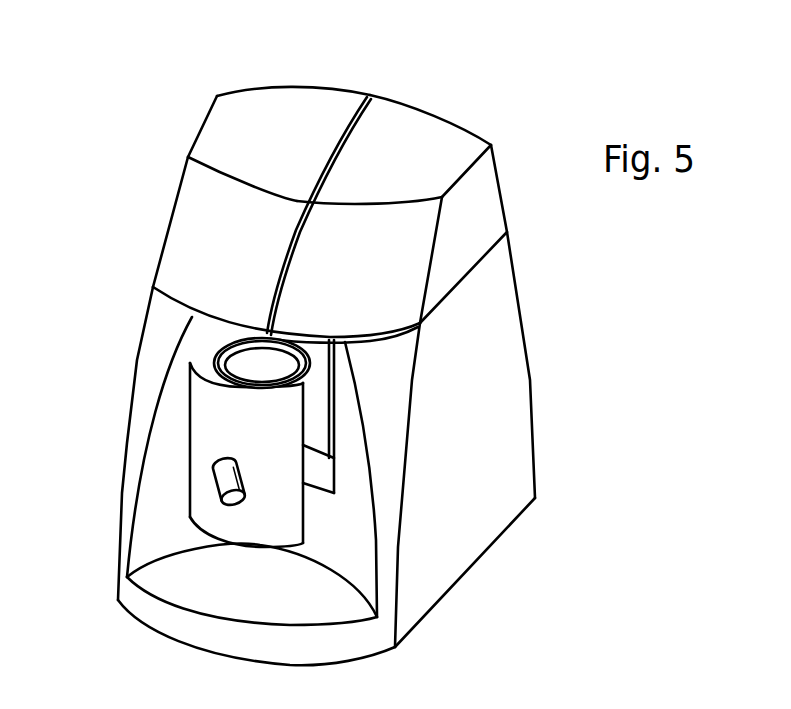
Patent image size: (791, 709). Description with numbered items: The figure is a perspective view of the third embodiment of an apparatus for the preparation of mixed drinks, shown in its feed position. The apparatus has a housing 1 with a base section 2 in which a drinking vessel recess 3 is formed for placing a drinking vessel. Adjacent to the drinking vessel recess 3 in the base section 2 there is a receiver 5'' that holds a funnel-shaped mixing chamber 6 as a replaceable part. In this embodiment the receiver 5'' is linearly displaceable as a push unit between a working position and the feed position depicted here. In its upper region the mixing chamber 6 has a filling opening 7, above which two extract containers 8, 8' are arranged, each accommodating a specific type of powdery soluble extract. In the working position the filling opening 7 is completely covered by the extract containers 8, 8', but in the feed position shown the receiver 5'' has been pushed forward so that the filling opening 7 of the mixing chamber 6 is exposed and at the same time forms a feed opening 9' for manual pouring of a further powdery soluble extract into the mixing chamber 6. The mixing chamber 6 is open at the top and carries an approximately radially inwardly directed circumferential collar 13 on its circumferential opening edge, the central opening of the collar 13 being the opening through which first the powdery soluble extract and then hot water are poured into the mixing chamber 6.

The housing 1 is at (359, 352).
The base section 2 is at (497, 432).
The drinking vessel recess 3 is at (360, 528).
The receiver 5'' is at (177, 455).
The mixing chamber 6 is at (242, 376).
The filling opening 7 is at (173, 361).
The feed opening 9' is at (173, 361).
The extract container 8 is at (252, 211).
The extract container 8' is at (394, 121).
The circumferential collar 13 is at (222, 482).